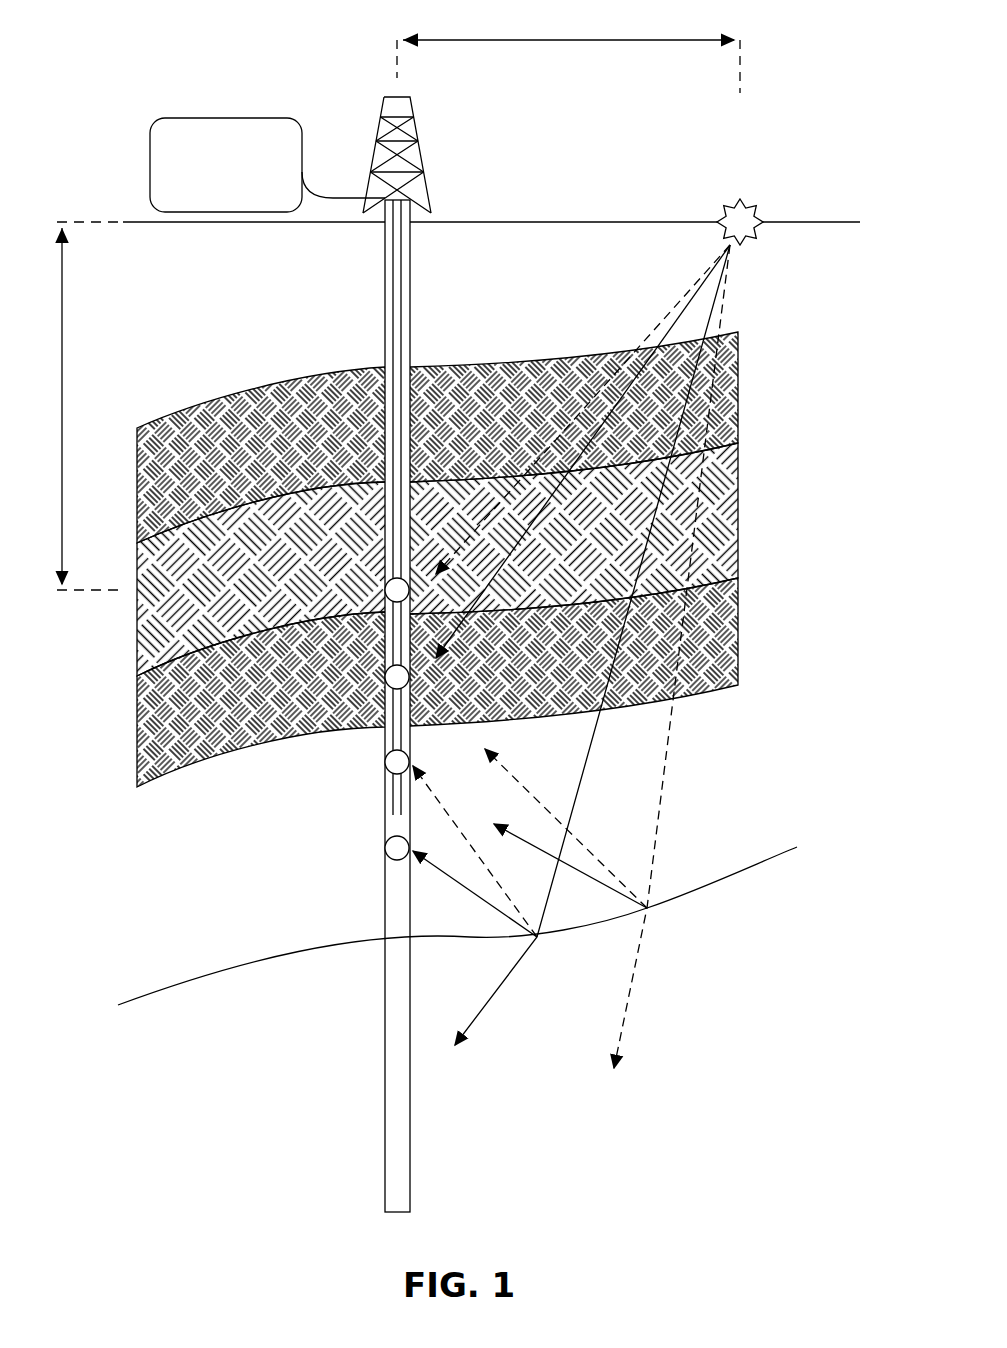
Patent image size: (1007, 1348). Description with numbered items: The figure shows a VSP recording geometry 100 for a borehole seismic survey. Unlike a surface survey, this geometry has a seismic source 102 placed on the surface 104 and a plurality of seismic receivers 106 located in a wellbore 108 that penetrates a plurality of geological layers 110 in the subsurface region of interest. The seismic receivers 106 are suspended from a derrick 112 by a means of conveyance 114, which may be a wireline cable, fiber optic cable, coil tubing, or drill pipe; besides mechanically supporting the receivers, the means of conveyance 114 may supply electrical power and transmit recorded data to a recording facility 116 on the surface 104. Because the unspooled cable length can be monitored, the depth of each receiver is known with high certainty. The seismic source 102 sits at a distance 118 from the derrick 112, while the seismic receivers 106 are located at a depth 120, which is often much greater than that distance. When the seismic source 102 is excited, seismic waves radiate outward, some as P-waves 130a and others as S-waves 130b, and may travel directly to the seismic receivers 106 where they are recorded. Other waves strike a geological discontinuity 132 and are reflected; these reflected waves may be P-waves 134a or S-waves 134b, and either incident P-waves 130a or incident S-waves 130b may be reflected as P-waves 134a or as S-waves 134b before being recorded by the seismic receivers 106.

The VSP recording geometry 100 is at (192, 25).
The seismic source 102 is at (750, 207).
The surface 104 is at (812, 222).
The seismic receivers 106 is at (386, 592).
The wellbore 108 is at (384, 1110).
The geological layers 110 is at (146, 693).
The derrick 112 is at (380, 117).
The means of conveyance 114 is at (410, 302).
The recording facility 116 is at (267, 165).
The distance 118 is at (568, 38).
The depth 120 is at (60, 383).
The P-waves 130a is at (687, 305).
The S-waves 130b is at (655, 340).
The geological discontinuity 132 is at (745, 870).
The reflected P-waves 134a is at (473, 890).
The reflected S-waves 134b is at (438, 797).